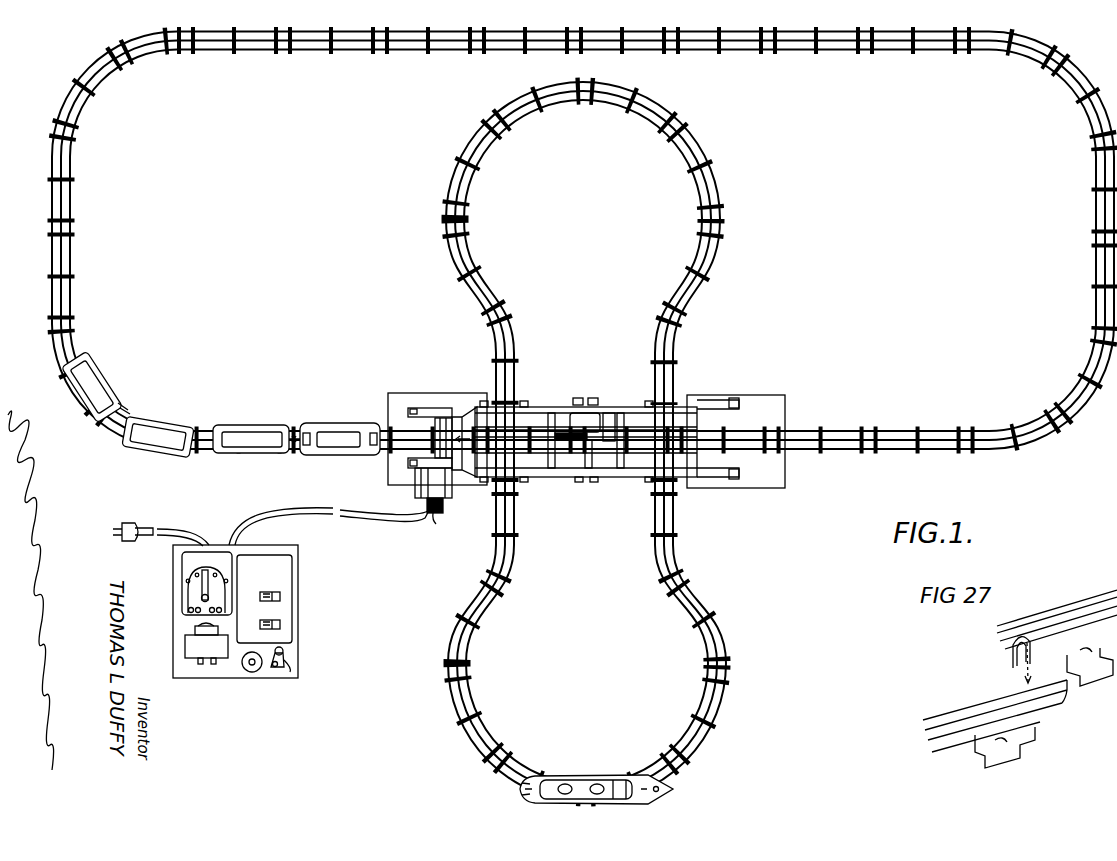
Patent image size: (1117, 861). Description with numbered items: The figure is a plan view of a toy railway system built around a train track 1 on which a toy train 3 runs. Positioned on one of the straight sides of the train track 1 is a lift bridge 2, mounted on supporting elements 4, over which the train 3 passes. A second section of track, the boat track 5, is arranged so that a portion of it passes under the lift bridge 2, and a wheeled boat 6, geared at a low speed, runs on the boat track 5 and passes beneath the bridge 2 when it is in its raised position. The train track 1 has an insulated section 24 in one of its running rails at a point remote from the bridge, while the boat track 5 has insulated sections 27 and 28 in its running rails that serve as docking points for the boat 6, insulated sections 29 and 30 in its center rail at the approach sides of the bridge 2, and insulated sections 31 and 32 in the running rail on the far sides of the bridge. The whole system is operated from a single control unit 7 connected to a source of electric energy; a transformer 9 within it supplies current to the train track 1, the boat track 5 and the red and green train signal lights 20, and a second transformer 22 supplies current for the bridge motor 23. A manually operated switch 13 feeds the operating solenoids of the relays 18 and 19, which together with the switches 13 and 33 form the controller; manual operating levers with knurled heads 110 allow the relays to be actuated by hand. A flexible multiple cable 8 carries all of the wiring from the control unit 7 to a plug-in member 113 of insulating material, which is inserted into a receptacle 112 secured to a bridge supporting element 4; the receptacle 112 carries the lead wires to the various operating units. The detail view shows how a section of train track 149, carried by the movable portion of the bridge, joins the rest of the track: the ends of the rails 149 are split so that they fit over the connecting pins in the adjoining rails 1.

In FIG. 1, the train track 1 is at (557, 241).
In FIG. 27, the train track 1 is at (960, 690).
In FIG. 1, the lift bridge 2 is at (611, 485).
In FIG. 1, the toy train 3 is at (324, 416).
In FIG. 1, the supporting elements 4 is at (429, 393).
In FIG. 1, the boat track 5 is at (737, 637).
In FIG. 1, the boat 6 is at (584, 776).
In FIG. 1, the control unit 7 is at (253, 626).
In FIG. 1, the multiple cable 8 is at (288, 517).
In FIG. 1, the transformer 9 is at (190, 587).
In FIG. 1, the manually operated switch 13 is at (286, 669).
In FIG. 1, the relay 18 is at (300, 599).
In FIG. 1, the relay 19 is at (293, 600).
In FIG. 1, the train signal lights 20 is at (436, 412).
In FIG. 1, the second transformer 22 is at (190, 645).
In FIG. 1, the bridge motor 23 is at (608, 414).
In FIG. 1, the insulated section 24 is at (264, 55).
In FIG. 1, the insulated section 27 is at (593, 104).
In FIG. 1, the insulated section 28 is at (558, 775).
In FIG. 1, the insulated section 29 is at (492, 344).
In FIG. 1, the insulated section 30 is at (682, 543).
In FIG. 1, the insulated section 31 is at (493, 556).
In FIG. 1, the insulated section 32 is at (680, 348).
In FIG. 1, the switch 33 is at (253, 673).
In FIG. 1, the knurled head 110 is at (282, 594).
In FIG. 1, the receptacle 112 is at (432, 485).
In FIG. 1, the plug-in member 113 is at (444, 507).
In FIG. 27, the section of train track 149 is at (1080, 612).